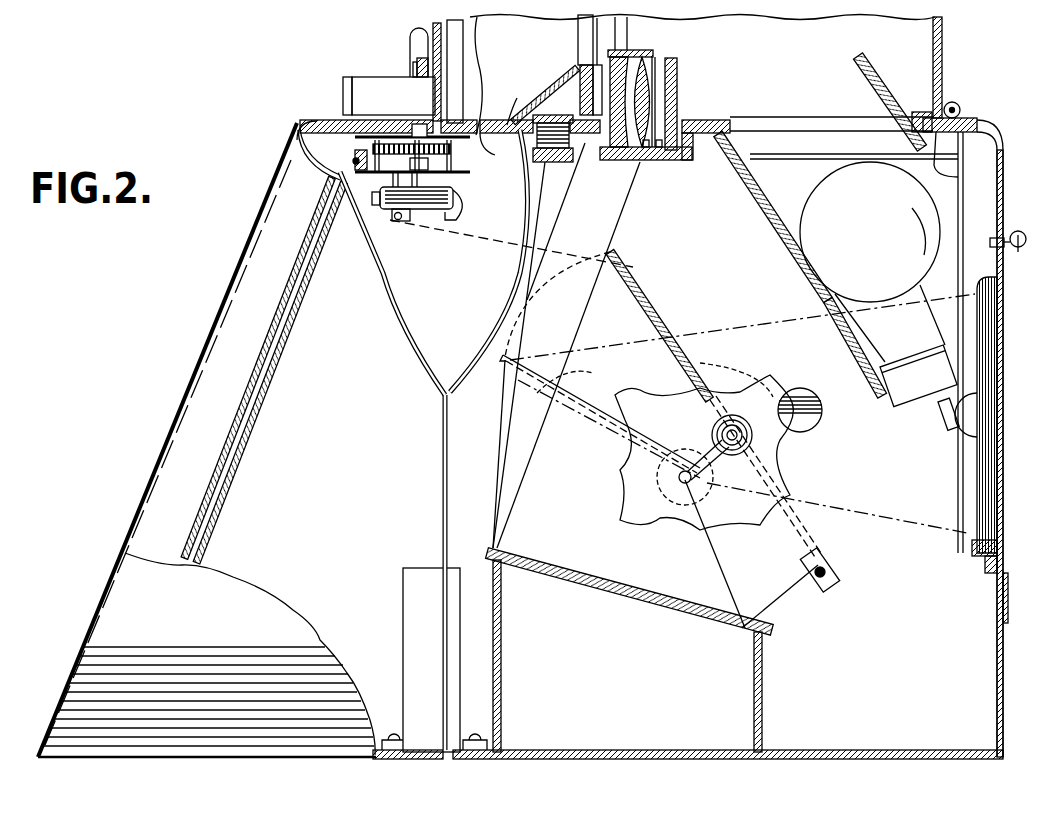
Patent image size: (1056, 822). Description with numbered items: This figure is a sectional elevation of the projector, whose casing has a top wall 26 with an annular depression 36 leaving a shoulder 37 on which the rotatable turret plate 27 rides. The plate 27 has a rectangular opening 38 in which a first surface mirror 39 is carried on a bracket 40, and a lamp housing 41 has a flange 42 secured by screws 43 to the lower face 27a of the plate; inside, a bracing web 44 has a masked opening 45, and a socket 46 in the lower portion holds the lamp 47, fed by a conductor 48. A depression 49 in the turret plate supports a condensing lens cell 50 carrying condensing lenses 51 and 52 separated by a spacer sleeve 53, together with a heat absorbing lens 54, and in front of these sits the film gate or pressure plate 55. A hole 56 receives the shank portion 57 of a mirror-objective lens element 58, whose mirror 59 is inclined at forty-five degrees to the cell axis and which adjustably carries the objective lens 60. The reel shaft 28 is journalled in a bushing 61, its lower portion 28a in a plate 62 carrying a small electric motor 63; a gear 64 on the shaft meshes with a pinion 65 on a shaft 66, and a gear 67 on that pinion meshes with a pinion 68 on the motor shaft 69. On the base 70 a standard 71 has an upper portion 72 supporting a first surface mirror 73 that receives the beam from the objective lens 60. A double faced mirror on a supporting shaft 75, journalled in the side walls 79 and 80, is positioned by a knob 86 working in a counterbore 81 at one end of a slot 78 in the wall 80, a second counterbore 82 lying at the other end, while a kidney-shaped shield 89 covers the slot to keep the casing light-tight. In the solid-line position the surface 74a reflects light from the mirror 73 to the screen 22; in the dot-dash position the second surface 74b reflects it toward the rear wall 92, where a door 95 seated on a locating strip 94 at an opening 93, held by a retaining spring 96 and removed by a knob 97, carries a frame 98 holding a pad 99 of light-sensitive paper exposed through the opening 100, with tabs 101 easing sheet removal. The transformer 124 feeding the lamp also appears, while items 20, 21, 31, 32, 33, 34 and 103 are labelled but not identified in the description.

The apparatus 20 is at (150, 472).
The front wall 21 is at (240, 312).
The screen 22 is at (300, 256).
The top wall 26 is at (975, 118).
The turret plate 27 is at (718, 132).
The lower face of turret plate 27a is at (964, 172).
The reel shaft 28 is at (413, 65).
The lower portion of reel shaft 28a is at (430, 164).
The housing 31 is at (383, 85).
The bracket 32 is at (352, 78).
The tube 33 is at (418, 40).
The wall 34 is at (943, 33).
The annular depression 36 is at (958, 100).
The annular shoulder 37 is at (961, 154).
The rectangular opening 38 is at (798, 117).
The first surface mirror 39 is at (875, 72).
The bracket 40 is at (908, 112).
The lamp housing 41 is at (772, 222).
The flange 42 is at (697, 138).
The screws 43 is at (708, 140).
The bracing web 44 is at (854, 146).
The masked opening 45 is at (770, 159).
The socket 46 is at (885, 398).
The lamp 47 is at (812, 270).
The conductor 48 is at (936, 425).
The depression 49 is at (655, 160).
The condensing lens cell 50 is at (635, 52).
The condensing lens 51 is at (658, 66).
The condensing lens 52 is at (617, 160).
The spacer sleeve 53 is at (642, 160).
The heat absorbing lens 54 is at (678, 74).
The film gate or pressure plate 55 is at (580, 60).
The hole 56 is at (535, 140).
The shank portion 57 is at (566, 152).
The mirror-objective lens element 58 is at (511, 97).
The mirror 59 is at (555, 90).
The objective lens 60 is at (548, 163).
The bushing 61 is at (416, 124).
The plate 62 is at (435, 172).
The electric motor 63 is at (453, 200).
The gear 64 is at (496, 141).
The pinion 65 is at (360, 148).
The shaft 66 is at (328, 168).
The gear 67 is at (353, 161).
The pinion 68 is at (325, 205).
The motor shaft 69 is at (390, 205).
The base 70 is at (810, 752).
The support or standard 71 is at (762, 686).
The upper portion of standard 72 is at (660, 610).
The first surface mirror 73 is at (766, 622).
The first surface of double faced mirror 74a is at (665, 348).
The second surface of double faced mirror 74b is at (700, 362).
The supporting shaft 75 is at (832, 568).
The slot 78 is at (705, 440).
The side wall 79 is at (310, 390).
The right side wall 80 is at (622, 485).
The counterbore 81 is at (767, 428).
The second counterbore 82 is at (680, 483).
The knob 86 is at (738, 430).
The kidney-shaped shield 89 is at (802, 420).
The rear wall 92 is at (997, 633).
The opening 93 is at (1000, 593).
The locating strip 94 is at (1010, 598).
The door 95 is at (985, 502).
The retaining spring 96 is at (992, 238).
The knob 97 is at (1021, 252).
The frame 98 is at (990, 565).
The pad 99 is at (972, 548).
The opening 100 is at (972, 553).
The tabs 101 is at (962, 440).
The line 103 is at (604, 66).
The transformer 124 is at (405, 582).